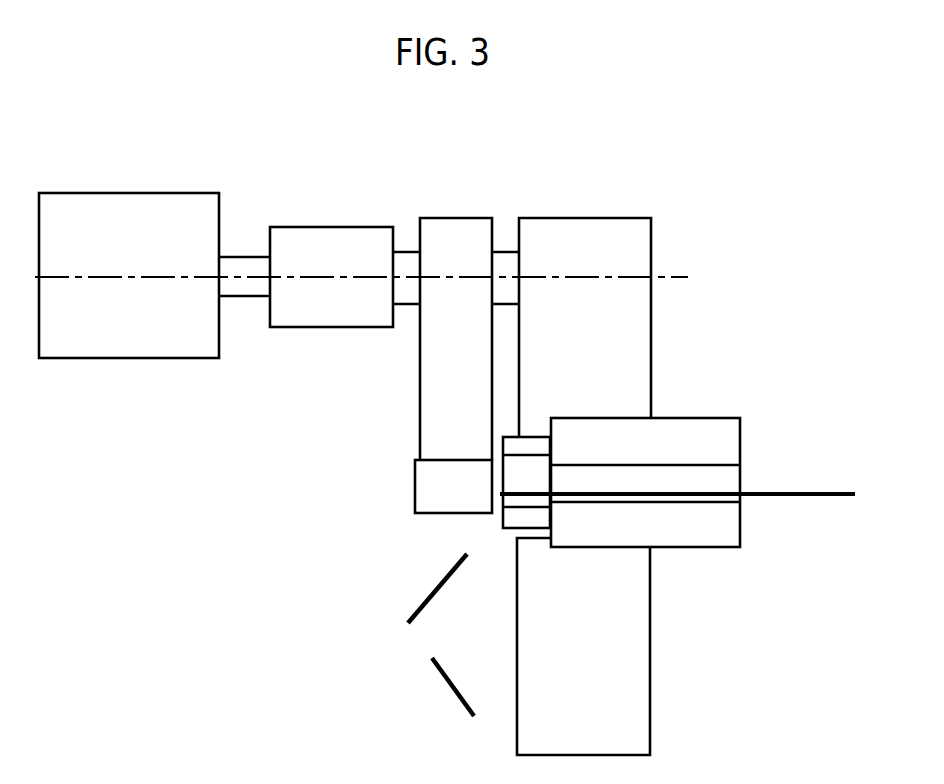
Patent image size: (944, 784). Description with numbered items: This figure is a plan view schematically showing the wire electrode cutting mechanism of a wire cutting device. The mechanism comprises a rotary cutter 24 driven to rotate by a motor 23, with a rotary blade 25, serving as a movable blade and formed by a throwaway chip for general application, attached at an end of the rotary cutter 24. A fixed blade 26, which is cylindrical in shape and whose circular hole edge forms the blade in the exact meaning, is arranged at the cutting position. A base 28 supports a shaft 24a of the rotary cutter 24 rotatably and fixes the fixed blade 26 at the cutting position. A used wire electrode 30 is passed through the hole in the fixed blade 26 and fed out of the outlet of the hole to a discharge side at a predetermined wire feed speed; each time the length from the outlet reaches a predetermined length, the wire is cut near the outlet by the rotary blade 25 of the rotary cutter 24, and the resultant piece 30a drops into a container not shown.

The motor 23 is at (133, 343).
The rotary cutter 24 is at (450, 260).
The shaft 24a is at (508, 268).
The rotary blade 25 is at (428, 480).
The fixed blade 26 is at (518, 517).
The base 28 is at (622, 335).
The used wire electrode 30 is at (790, 492).
The piece 30a is at (435, 592).